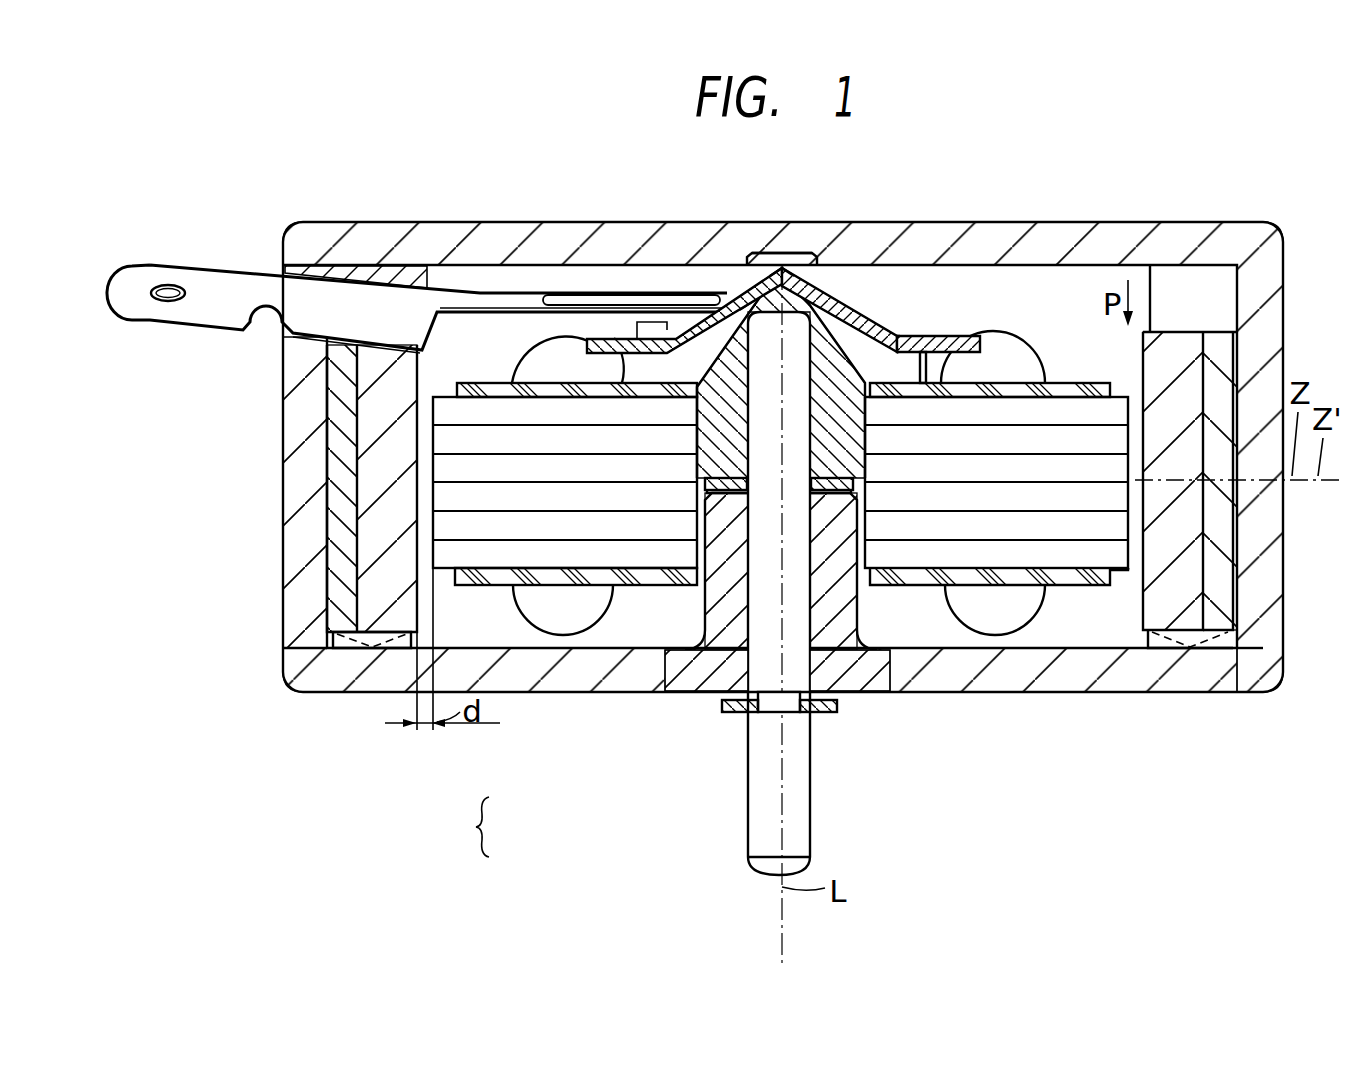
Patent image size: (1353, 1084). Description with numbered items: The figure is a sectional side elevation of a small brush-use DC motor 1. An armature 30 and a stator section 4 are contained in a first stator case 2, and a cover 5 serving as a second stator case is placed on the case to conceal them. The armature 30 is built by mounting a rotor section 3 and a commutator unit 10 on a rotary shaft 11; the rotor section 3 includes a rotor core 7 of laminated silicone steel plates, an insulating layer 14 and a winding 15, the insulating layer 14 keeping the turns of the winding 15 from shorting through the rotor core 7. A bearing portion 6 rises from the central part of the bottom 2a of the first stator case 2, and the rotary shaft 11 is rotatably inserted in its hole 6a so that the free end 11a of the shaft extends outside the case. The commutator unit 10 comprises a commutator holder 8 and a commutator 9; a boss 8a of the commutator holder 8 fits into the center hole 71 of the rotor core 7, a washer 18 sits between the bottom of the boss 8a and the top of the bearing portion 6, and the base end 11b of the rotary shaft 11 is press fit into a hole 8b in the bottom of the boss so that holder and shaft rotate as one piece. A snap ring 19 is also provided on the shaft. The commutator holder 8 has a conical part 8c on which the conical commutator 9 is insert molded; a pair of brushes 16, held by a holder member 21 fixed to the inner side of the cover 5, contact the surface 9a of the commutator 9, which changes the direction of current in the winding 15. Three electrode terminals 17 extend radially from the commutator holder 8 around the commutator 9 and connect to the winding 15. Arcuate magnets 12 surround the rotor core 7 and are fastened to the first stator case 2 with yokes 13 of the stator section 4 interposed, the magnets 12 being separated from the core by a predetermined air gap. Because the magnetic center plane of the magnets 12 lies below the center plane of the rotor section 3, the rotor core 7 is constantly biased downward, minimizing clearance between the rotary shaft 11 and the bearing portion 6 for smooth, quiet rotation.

The small DC motor 1 is at (1027, 214).
The first stator case 2 is at (308, 650).
The bottom of the first stator case 2a is at (1183, 680).
The rotor section 3 is at (634, 602).
The stator section 4 is at (1124, 625).
The cover 5 is at (1188, 245).
The bearing portion 6 is at (855, 495).
The hole of the bearing portion 6a is at (706, 700).
The rotor core 7 is at (918, 560).
The commutator holder 8 is at (683, 348).
The boss of the commutator holder 8a is at (900, 388).
The hole in the boss 8b is at (757, 258).
The conical part of the commutator holder 8c is at (792, 278).
The commutator 9 is at (855, 312).
The surface of the commutator 9a is at (818, 300).
The commutator unit 10 is at (884, 296).
The rotary shaft 11 is at (812, 700).
The free end of the rotary shaft 11a is at (808, 818).
The base end of the rotary shaft 11b is at (757, 320).
The arcuate magnet 12 is at (1170, 340).
The yoke 13 is at (1215, 345).
The insulating layer 14 is at (487, 383).
The winding 15 is at (555, 633).
The brush 16 is at (467, 300).
The electrode terminal 17 is at (605, 345).
The washer 18 is at (860, 547).
The snap ring 19 is at (733, 712).
The holder member 21 is at (328, 265).
The armature 30 is at (477, 826).
The center hole 71 is at (700, 525).